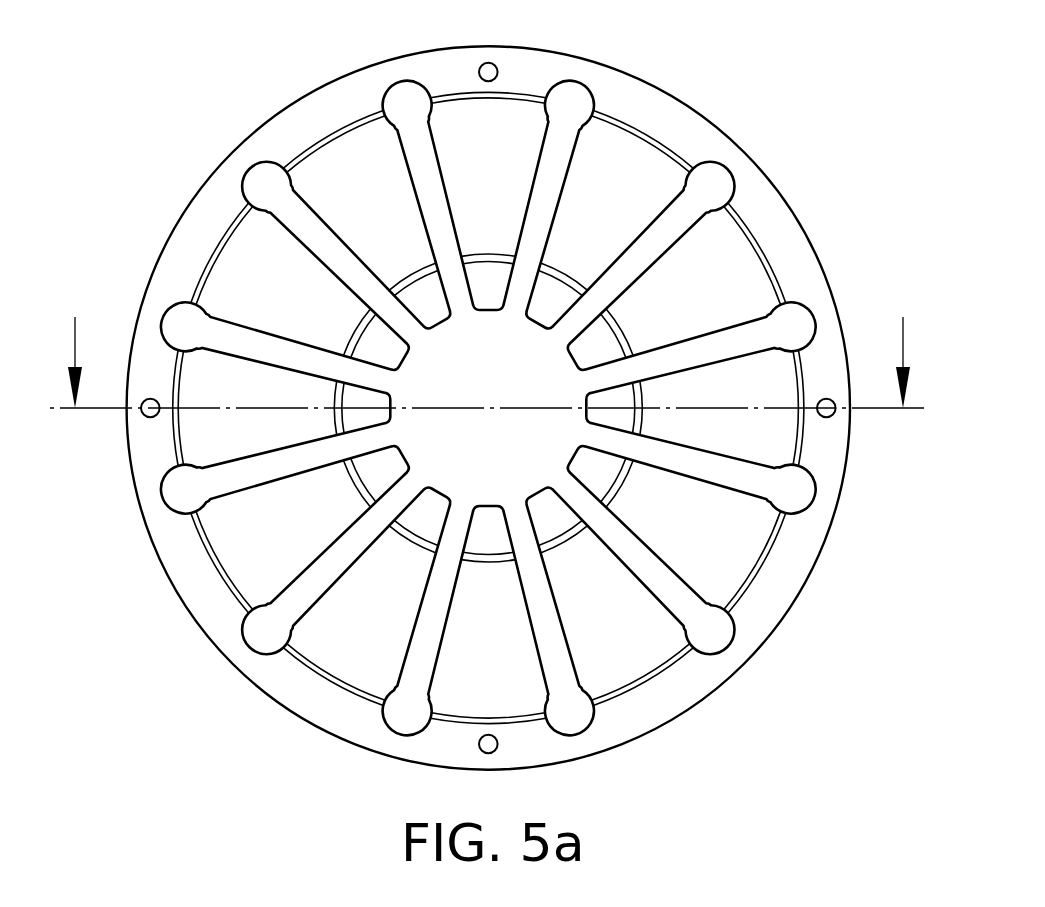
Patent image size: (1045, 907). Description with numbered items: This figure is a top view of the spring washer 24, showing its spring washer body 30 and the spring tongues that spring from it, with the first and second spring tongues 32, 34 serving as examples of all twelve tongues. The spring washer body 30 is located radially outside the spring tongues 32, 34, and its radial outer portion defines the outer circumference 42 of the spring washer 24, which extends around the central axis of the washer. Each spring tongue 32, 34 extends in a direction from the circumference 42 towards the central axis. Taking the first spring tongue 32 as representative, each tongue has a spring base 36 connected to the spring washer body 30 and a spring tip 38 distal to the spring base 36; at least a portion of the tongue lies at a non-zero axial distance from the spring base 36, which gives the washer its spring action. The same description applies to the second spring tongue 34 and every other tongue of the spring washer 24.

The spring washer 24 is at (270, 72).
The outer circumference 42 is at (131, 305).
The spring washer body 30 is at (802, 280).
The first spring tongue 32 is at (743, 430).
The second spring tongue 34 is at (702, 287).
The spring base 36 is at (806, 380).
The spring tip 38 is at (582, 413).